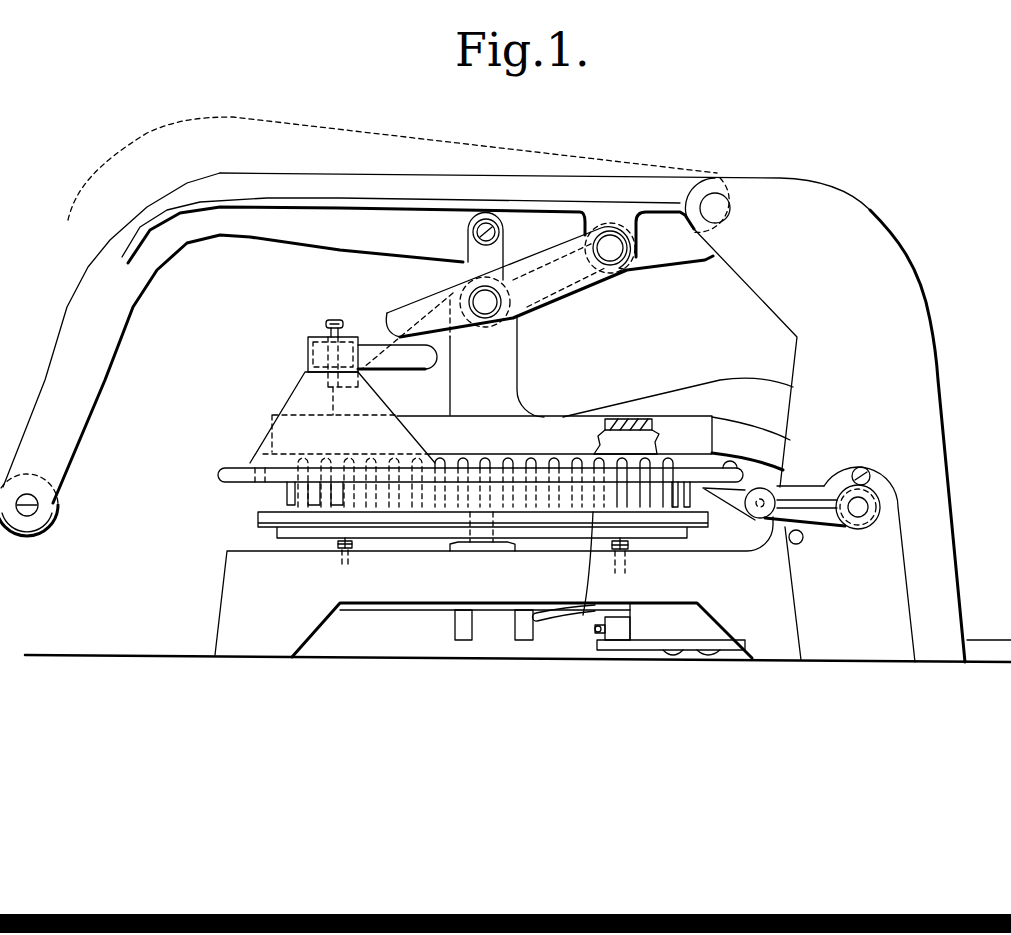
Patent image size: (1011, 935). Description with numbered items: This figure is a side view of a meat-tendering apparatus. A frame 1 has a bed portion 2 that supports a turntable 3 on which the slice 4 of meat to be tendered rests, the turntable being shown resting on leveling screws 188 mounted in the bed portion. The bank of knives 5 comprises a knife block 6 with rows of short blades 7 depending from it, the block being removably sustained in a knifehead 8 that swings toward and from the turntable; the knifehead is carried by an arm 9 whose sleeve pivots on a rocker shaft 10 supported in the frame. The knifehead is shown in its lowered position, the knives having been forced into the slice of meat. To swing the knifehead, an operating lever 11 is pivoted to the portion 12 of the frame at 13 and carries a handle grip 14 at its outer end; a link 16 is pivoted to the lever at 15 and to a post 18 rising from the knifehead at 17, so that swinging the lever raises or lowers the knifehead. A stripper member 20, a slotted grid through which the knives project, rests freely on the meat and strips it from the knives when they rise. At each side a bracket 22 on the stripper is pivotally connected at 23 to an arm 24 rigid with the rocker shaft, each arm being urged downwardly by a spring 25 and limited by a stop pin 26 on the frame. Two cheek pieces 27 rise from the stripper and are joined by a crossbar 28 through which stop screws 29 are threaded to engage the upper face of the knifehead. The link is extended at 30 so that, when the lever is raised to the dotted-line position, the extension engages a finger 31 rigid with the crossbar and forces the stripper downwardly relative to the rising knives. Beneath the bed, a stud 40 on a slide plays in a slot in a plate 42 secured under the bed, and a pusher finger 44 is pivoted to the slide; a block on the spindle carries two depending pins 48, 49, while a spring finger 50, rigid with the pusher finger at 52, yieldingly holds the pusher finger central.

The frame 1 is at (928, 492).
The bed portion 2 is at (392, 587).
The turntable 3 is at (430, 522).
The slice of meat 4 is at (580, 606).
The bank of knives 5 is at (287, 492).
The knife block 6 is at (622, 442).
The short blades 7 is at (345, 507).
The knifehead 8 is at (578, 430).
The arm 9 is at (738, 388).
The rocker shaft 10 is at (867, 515).
The operating lever 11 is at (235, 178).
The portion of the frame 12 is at (850, 253).
The pivot of operating lever 13 is at (717, 197).
The handle grip 14 is at (53, 517).
The pivot of link to lever 15 is at (613, 240).
The link 16 is at (567, 282).
The pivot of link to post 17 is at (470, 300).
The post 18 is at (513, 345).
The leveling screws 188 is at (340, 553).
The stripper member 20 is at (242, 468).
The bracket 22 is at (740, 495).
The pivotal connection of bracket 23 is at (760, 508).
The arm 24 is at (802, 487).
The spring 25 is at (830, 493).
The stop pin 26 is at (803, 542).
The cheek pieces 27 is at (290, 398).
The crossbar 28 is at (310, 338).
The stop screws 29 is at (320, 333).
The extension of link 30 is at (400, 320).
The finger 31 is at (412, 357).
The stud 40 is at (713, 652).
The plate 42 is at (653, 645).
The pusher finger 44 is at (583, 615).
The depending pin 48 is at (525, 640).
The depending pin 49 is at (465, 640).
The spring finger 50 is at (620, 630).
The attachment of spring fingers 52 is at (602, 632).